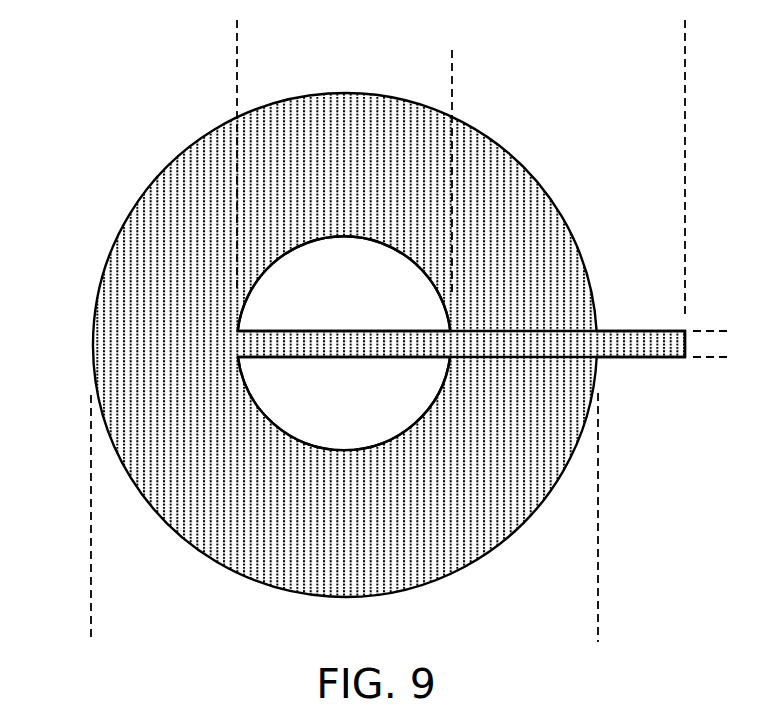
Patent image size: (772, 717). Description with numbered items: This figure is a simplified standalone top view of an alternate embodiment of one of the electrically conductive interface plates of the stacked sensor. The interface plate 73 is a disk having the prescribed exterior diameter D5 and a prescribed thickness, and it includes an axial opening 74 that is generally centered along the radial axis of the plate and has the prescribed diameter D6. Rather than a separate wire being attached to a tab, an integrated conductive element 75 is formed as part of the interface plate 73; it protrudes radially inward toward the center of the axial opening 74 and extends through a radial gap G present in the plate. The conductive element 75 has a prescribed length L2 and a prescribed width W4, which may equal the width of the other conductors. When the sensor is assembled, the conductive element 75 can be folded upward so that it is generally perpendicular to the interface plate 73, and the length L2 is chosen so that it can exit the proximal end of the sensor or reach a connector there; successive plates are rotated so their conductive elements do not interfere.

The interface plate 73 is at (92, 157).
The axial opening 74 is at (333, 298).
The conductive element 75 is at (648, 360).
The radial gap G is at (592, 326).
The length L2 is at (238, 28).
The diameter D6 is at (238, 59).
The exterior diameter D5 is at (92, 620).
The width W4 is at (723, 378).